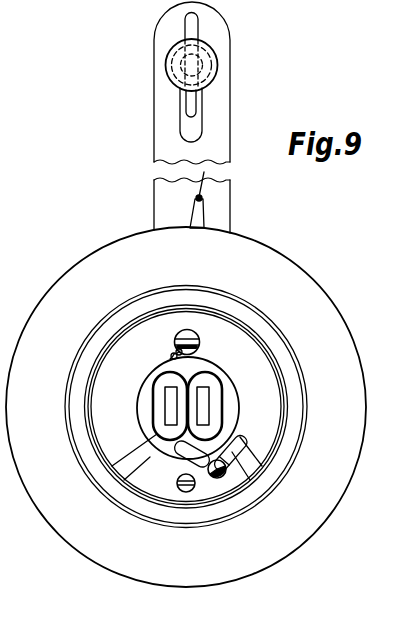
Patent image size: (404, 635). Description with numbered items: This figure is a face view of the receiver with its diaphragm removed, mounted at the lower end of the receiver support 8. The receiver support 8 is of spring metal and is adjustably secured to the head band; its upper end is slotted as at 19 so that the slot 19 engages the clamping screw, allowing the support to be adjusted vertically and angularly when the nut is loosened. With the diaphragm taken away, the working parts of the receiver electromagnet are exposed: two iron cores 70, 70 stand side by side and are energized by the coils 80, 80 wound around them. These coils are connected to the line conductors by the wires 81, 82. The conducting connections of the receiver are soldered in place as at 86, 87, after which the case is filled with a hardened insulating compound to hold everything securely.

The receiver support 8 is at (165, 150).
The slot 19 is at (184, 120).
The iron cores 70 is at (200, 407).
The coils 80 is at (162, 377).
The wire 81 is at (177, 352).
The wire 82 is at (230, 439).
The soldered connection 86 is at (200, 343).
The soldered connection 87 is at (220, 477).